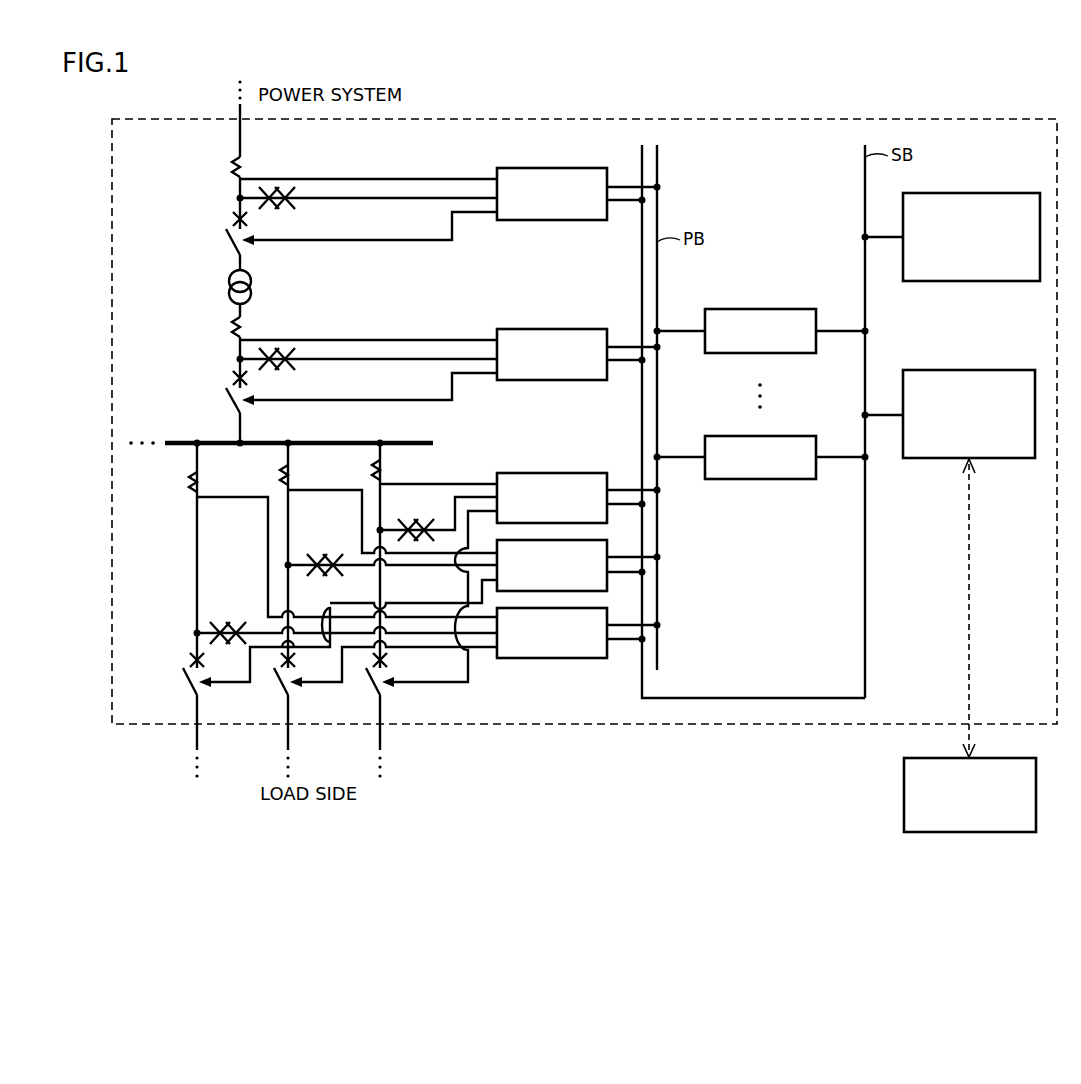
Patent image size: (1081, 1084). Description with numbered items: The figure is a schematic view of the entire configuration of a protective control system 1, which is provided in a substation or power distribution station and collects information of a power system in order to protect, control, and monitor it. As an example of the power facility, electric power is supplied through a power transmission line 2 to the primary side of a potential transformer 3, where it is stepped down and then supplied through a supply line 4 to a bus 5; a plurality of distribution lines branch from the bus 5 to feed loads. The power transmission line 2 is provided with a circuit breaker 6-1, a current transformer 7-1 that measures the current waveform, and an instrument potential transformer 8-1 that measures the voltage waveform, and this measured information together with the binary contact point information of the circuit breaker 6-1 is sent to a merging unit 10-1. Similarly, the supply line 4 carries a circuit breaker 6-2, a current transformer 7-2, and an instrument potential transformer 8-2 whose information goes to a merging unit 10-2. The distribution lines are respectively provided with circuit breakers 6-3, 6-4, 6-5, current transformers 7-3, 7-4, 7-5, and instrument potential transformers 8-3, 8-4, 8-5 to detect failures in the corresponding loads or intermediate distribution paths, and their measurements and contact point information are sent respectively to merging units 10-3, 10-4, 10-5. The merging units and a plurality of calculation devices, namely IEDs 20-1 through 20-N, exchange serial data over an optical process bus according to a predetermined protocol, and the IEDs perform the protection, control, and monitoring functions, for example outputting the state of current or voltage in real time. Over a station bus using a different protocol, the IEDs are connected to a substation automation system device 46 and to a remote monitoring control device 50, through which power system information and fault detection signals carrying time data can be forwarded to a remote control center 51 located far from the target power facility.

The protective control system 1 is at (1025, 119).
The power transmission line 2 is at (240, 136).
The potential transformer 3 is at (252, 281).
The supply line 4 is at (240, 427).
The bus 5 is at (410, 444).
The circuit breaker 6-1 is at (226, 231).
The circuit breaker 6-2 is at (226, 390).
The circuit breaker 6-3 is at (367, 680).
The circuit breaker 6-4 is at (275, 680).
The circuit breaker 6-5 is at (184, 680).
The current transformer 7-1 is at (244, 168).
The current transformer 7-2 is at (244, 328).
The current transformer 7-3 is at (384, 470).
The current transformer 7-4 is at (292, 477).
The current transformer 7-5 is at (201, 484).
The instrument potential transformer 8-1 is at (290, 208).
The instrument potential transformer 8-2 is at (290, 369).
The instrument potential transformer 8-3 is at (423, 518).
The instrument potential transformer 8-4 is at (332, 553).
The instrument potential transformer 8-5 is at (235, 621).
The merging unit 10-1 is at (560, 168).
The merging unit 10-2 is at (560, 329).
The merging unit 10-3 is at (560, 473).
The merging unit 10-4 is at (609, 553).
The merging unit 10-5 is at (560, 658).
The IED (calculation device) 20-1 is at (780, 309).
The IED (calculation device) 20-N is at (780, 436).
The substation automation system device 46 is at (993, 193).
The remote monitoring control device 50 is at (993, 370).
The remote control center 51 is at (993, 758).